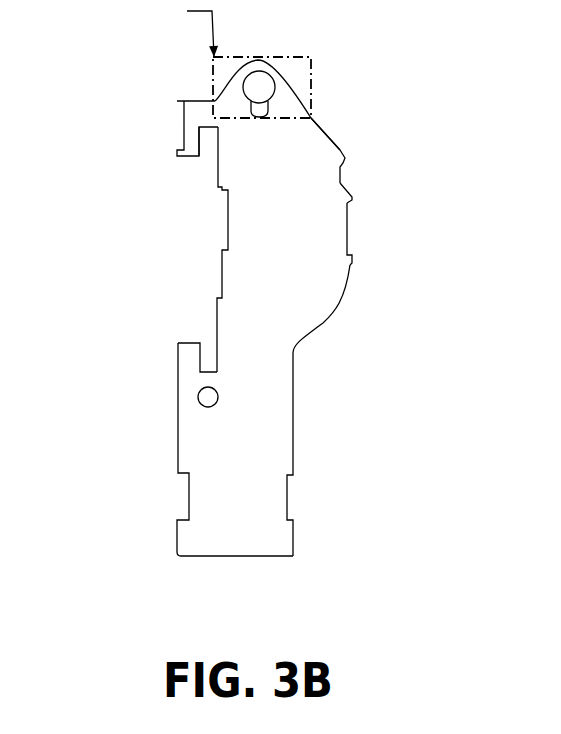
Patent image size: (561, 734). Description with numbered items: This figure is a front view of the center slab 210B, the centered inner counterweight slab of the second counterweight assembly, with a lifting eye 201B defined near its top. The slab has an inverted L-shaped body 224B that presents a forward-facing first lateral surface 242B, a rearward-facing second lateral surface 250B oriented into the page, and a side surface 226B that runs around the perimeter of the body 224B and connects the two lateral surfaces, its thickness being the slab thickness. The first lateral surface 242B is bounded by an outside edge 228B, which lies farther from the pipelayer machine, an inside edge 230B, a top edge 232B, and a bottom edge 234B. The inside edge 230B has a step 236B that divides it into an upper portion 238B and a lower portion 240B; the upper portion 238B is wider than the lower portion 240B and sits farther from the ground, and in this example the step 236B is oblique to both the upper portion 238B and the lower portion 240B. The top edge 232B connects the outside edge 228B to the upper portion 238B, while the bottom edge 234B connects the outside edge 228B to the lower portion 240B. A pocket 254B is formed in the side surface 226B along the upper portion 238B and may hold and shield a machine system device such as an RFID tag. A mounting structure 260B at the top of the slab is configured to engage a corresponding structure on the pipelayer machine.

The center slab 210B is at (118, 62).
The lifting eye 201B is at (265, 57).
The top edge 232B is at (183, 100).
The mounting structure 260B is at (202, 148).
The first lateral surface 242B is at (255, 232).
The body 224B is at (178, 363).
The side surface 226B is at (178, 410).
The outside edge 228B is at (178, 458).
The bottom edge 234B is at (185, 558).
The lower portion 240B is at (293, 462).
The step 236B is at (323, 323).
The upper portion 238B is at (352, 258).
The second lateral surface 250B is at (352, 188).
The pocket 254B is at (343, 172).
The inside edge 230B is at (340, 143).